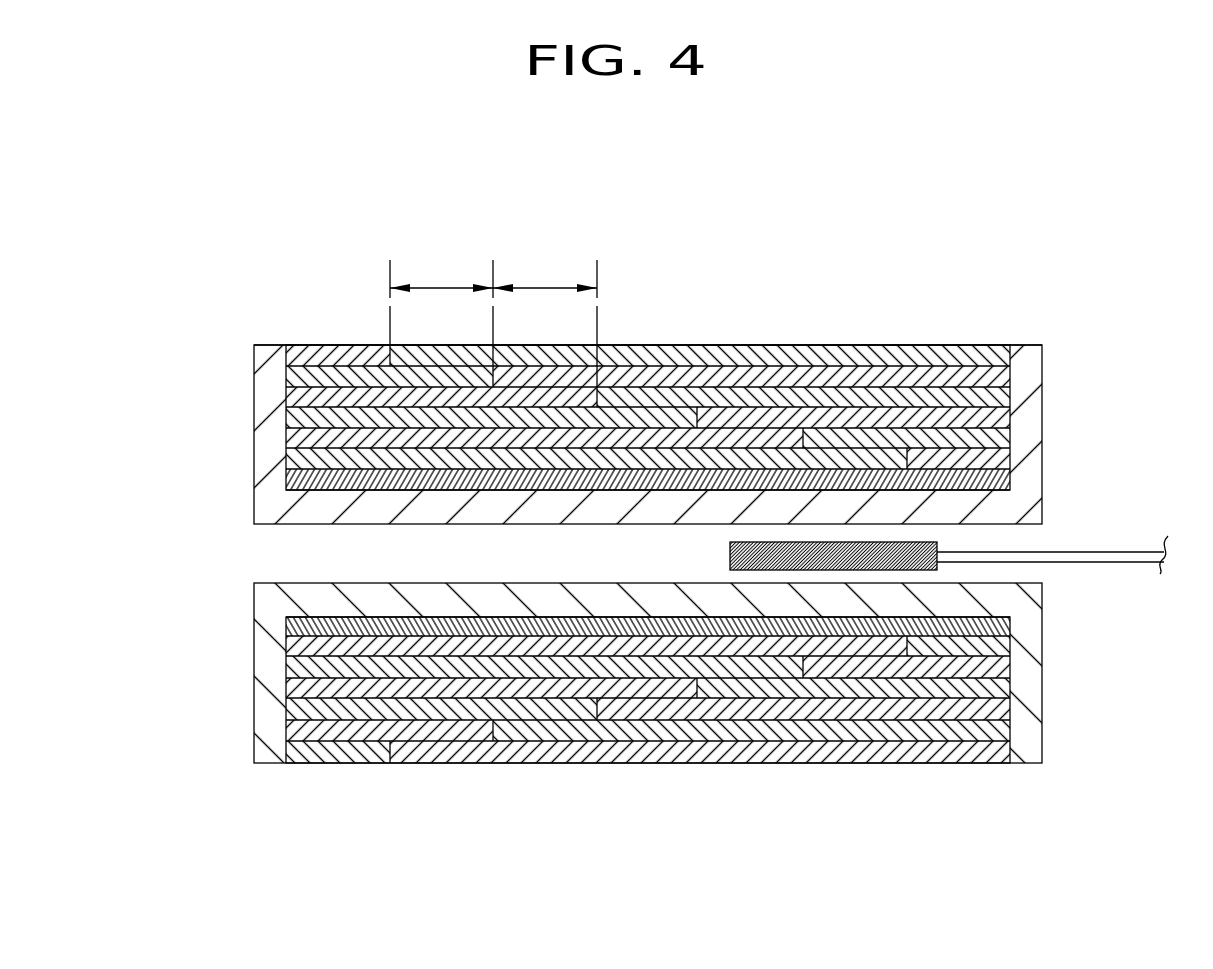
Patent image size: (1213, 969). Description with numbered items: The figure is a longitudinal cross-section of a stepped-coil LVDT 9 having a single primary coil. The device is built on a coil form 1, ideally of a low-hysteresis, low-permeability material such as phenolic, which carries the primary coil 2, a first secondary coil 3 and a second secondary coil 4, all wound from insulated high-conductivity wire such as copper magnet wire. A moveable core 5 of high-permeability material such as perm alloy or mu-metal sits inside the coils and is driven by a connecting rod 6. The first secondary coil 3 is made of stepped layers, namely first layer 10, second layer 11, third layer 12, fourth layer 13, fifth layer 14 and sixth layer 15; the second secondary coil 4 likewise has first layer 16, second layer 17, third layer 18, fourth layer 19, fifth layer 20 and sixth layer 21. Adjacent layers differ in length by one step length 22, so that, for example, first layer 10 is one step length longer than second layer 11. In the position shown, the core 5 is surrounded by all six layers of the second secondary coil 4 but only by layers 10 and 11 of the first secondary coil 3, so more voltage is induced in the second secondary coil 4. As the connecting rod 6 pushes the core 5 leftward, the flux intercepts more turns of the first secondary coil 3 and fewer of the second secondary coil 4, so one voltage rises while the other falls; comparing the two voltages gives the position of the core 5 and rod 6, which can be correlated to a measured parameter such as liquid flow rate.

The coil form 1 is at (362, 513).
The primary coil 2 is at (330, 618).
The first secondary coil 3 is at (334, 337).
The second secondary coil 4 is at (898, 339).
The moveable core 5 is at (730, 556).
The connecting rod 6 is at (1113, 552).
The stepped-coil LVDT 9 is at (878, 238).
The first layer 10 is at (283, 465).
The second layer 11 is at (290, 445).
The third layer 12 is at (290, 420).
The fourth layer 13 is at (290, 398).
The fifth layer 14 is at (297, 377).
The sixth layer 15 is at (305, 358).
The first layer 16 is at (1002, 467).
The second layer 17 is at (1003, 442).
The third layer 18 is at (995, 422).
The fourth layer 19 is at (1002, 400).
The fifth layer 20 is at (1005, 383).
The sixth layer 21 is at (985, 363).
The step length 22 is at (542, 273).